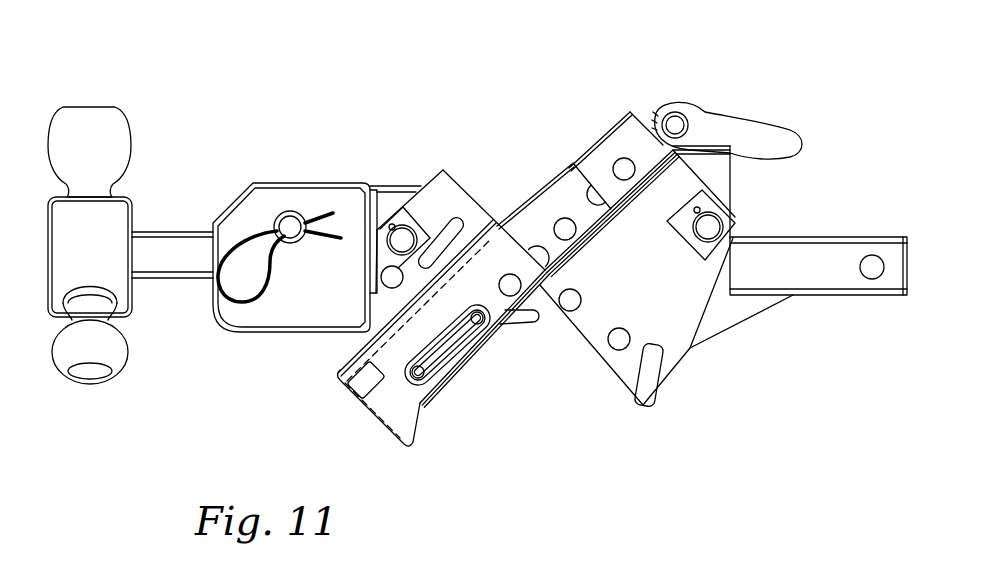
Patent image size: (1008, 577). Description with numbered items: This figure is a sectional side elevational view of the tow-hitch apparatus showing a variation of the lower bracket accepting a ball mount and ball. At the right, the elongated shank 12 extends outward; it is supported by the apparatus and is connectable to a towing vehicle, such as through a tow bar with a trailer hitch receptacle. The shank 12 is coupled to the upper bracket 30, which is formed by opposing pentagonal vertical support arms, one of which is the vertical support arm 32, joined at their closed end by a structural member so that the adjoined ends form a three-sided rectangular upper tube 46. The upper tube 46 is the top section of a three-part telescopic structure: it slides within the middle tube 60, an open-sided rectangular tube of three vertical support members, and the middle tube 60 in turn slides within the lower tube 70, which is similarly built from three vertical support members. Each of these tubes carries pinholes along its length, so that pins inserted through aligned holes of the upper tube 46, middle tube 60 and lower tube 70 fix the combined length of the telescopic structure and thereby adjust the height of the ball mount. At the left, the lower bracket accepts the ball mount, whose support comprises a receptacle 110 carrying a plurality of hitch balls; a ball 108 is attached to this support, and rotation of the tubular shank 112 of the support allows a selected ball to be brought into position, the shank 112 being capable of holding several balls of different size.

The elongated shank 12 is at (830, 258).
The upper bracket 30 is at (662, 334).
The vertical support arm 32 is at (610, 318).
The upper tube 46 is at (611, 148).
The middle tube 60 is at (561, 200).
The lower tube 70 is at (505, 242).
The ball 108 is at (95, 128).
The receptacle 110 is at (115, 187).
The tubular shank 112 is at (175, 237).